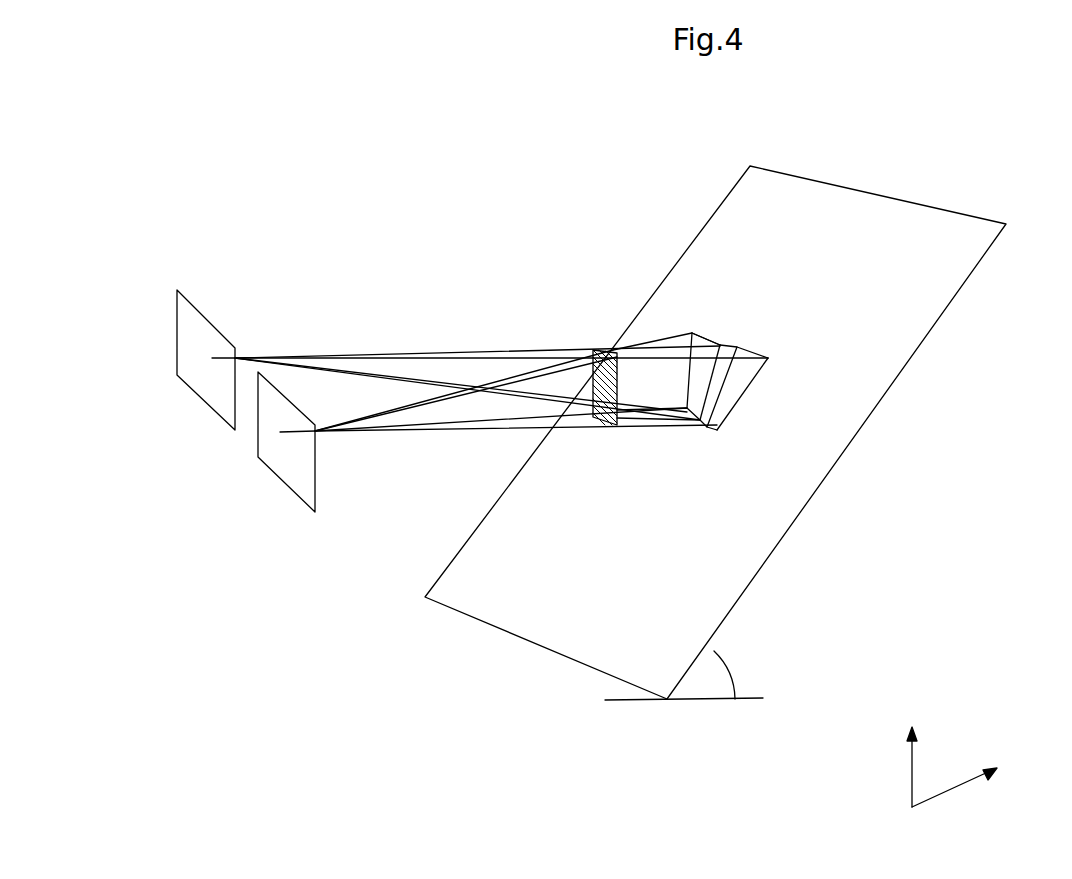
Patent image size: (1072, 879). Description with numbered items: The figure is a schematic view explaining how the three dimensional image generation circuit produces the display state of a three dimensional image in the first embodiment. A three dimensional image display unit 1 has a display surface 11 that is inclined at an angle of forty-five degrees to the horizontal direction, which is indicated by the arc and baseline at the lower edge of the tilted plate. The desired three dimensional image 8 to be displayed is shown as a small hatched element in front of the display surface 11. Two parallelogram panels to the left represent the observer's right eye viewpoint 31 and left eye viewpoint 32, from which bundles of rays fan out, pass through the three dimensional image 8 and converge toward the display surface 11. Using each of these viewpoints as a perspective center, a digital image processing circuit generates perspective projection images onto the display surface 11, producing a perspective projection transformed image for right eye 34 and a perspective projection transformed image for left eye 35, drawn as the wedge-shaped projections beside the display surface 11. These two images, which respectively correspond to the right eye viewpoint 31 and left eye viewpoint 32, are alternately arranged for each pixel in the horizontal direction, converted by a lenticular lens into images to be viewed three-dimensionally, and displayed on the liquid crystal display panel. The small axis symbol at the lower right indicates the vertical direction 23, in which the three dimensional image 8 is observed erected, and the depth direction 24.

The three dimensional image display unit 1 is at (768, 531).
The display surface 11 is at (872, 337).
The three dimensional image 8 is at (607, 352).
The right eye viewpoint 31 is at (290, 480).
The left eye viewpoint 32 is at (203, 330).
The perspective projection transformed image for right eye 34 is at (700, 338).
The perspective projection transformed image for left eye 35 is at (730, 388).
The vertical direction 23 is at (912, 765).
The depth direction 24 is at (958, 787).